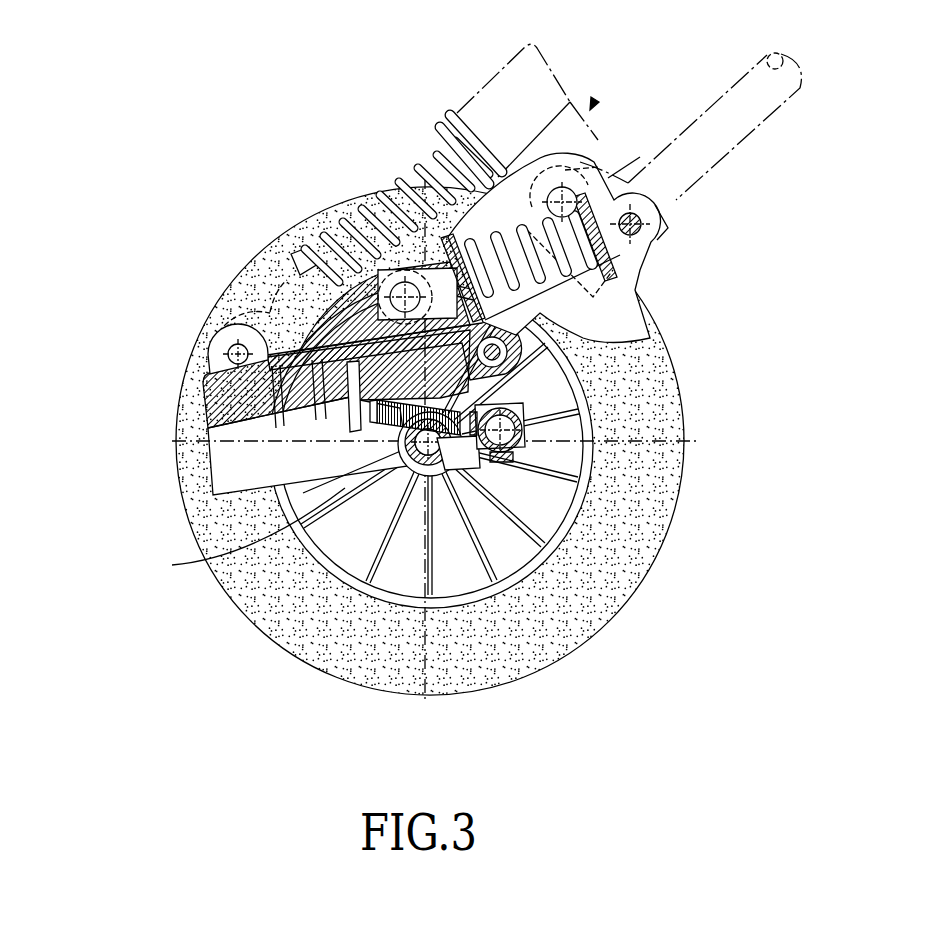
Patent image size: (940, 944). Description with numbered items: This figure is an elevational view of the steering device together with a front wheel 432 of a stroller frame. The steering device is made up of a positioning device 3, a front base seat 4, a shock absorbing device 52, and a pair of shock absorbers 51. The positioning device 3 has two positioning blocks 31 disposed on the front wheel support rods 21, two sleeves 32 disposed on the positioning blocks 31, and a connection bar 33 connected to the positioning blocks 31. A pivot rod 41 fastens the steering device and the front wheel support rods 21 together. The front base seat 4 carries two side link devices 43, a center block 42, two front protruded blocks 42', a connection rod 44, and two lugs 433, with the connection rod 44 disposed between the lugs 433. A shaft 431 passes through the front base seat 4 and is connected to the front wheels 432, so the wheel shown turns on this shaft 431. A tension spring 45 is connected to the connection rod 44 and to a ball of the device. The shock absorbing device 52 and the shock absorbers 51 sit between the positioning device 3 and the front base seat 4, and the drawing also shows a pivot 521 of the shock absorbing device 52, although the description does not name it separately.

The positioning device 3 is at (594, 102).
The front wheel support rod 21 is at (733, 127).
The positioning block 31 is at (608, 178).
The sleeve 32 is at (508, 97).
The connection bar 33 is at (641, 232).
The front base seat 4 is at (215, 402).
The pivot rod 41 is at (520, 373).
The center block 42 is at (335, 251).
The front protruded block 42' is at (202, 311).
The side link device 43 is at (233, 467).
The connection rod 44 is at (473, 450).
The tension spring 45 is at (272, 514).
The shaft 431 is at (414, 472).
The front wheel 432 is at (295, 623).
The lug 433 is at (473, 453).
The shock absorber 51 is at (432, 145).
The shock absorbing device 52 is at (645, 340).
The swing arm pivot 521 is at (510, 186).